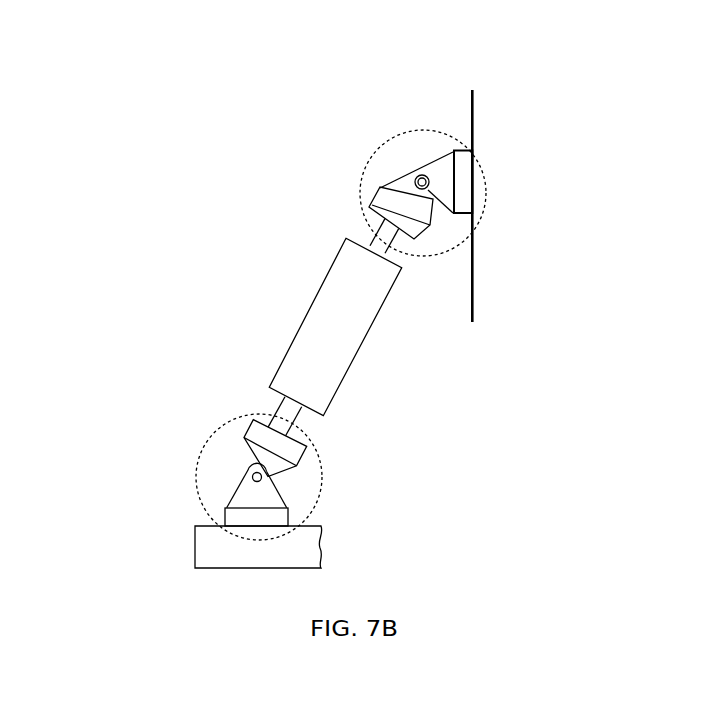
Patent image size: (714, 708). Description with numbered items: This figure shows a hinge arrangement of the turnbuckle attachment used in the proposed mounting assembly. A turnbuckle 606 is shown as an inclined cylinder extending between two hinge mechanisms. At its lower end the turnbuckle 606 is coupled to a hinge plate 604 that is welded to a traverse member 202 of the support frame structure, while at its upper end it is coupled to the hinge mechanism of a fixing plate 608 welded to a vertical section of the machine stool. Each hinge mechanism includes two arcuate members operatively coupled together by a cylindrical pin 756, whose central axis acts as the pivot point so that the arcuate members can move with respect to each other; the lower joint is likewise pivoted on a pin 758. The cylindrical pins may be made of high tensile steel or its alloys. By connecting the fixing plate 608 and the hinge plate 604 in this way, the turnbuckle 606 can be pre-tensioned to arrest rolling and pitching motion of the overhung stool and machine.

The traverse member 202 is at (184, 550).
The hinge plate 604 is at (224, 524).
The turnbuckle 606 is at (333, 355).
The fixing plate 608 is at (470, 152).
The cylindrical pin 756 is at (416, 185).
The pivot pin 758 is at (265, 478).